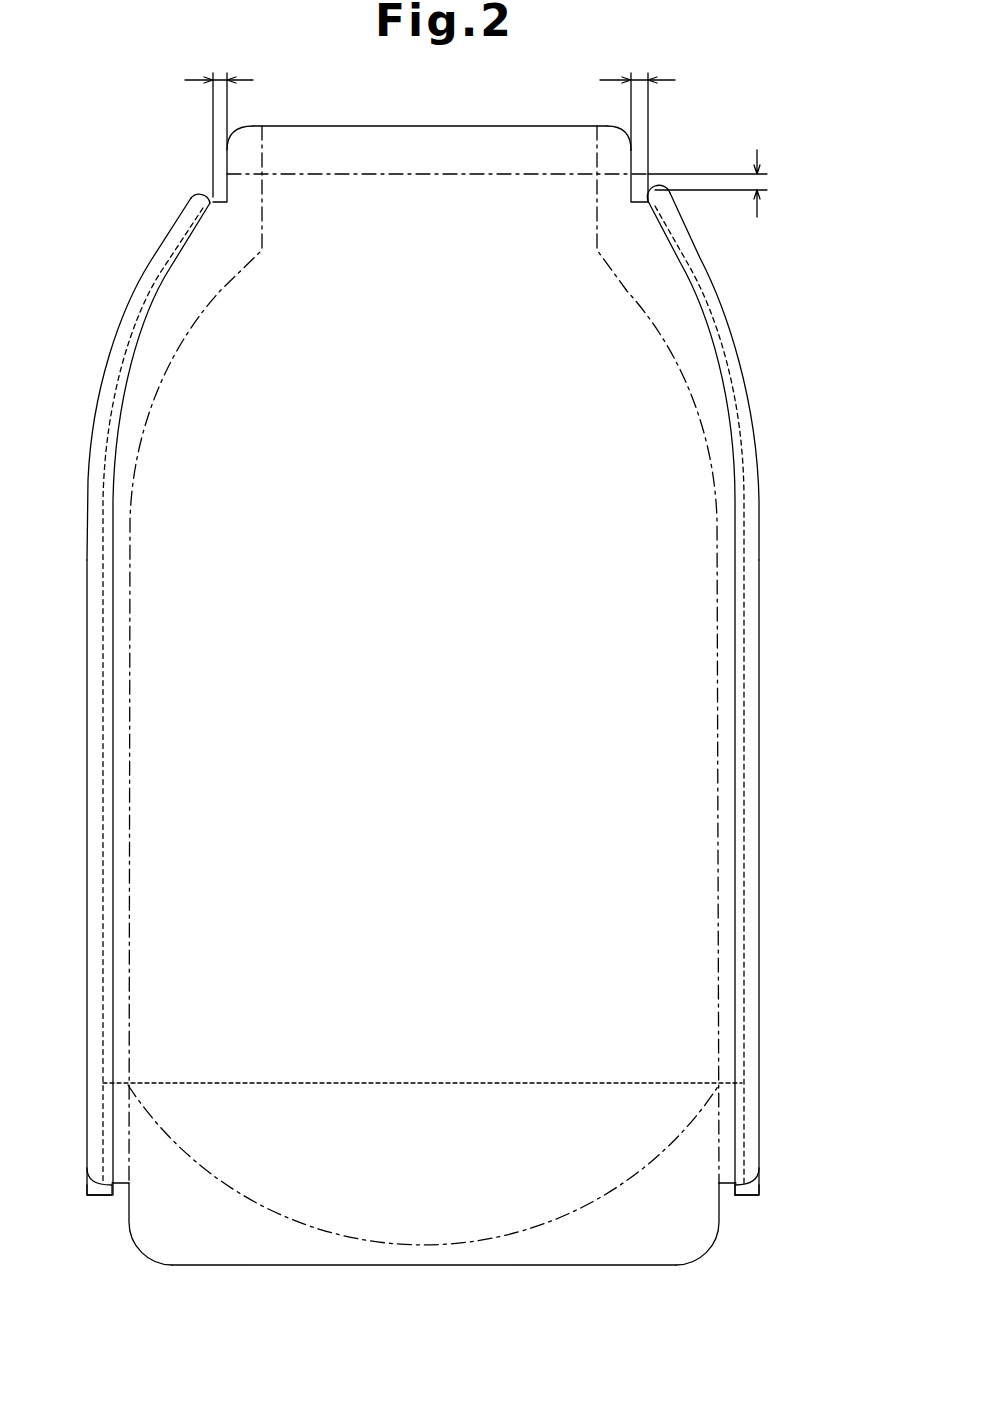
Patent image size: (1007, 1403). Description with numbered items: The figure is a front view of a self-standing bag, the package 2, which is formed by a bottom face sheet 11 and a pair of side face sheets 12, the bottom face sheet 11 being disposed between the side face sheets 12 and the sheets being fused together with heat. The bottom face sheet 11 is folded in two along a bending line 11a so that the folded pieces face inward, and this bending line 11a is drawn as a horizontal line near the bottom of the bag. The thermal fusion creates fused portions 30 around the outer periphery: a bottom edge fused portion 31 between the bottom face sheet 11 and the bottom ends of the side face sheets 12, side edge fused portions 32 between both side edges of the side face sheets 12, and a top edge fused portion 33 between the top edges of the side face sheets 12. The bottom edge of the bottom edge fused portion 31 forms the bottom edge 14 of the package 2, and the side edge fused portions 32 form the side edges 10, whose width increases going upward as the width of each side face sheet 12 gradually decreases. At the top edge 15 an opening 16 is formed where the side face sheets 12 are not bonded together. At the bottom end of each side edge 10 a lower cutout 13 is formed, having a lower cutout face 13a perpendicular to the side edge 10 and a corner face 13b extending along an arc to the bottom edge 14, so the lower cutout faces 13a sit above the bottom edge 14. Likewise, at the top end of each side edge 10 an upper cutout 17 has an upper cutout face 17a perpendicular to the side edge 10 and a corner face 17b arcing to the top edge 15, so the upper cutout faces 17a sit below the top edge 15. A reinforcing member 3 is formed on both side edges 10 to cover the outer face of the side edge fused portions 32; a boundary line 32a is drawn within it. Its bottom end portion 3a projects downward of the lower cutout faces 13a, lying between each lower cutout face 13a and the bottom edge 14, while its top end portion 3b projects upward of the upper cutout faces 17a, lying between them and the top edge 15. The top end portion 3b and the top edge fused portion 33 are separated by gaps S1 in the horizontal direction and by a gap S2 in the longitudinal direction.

The package 2 is at (707, 115).
The reinforcing member 3 is at (755, 482).
The bottom end portion of the reinforcing member 3a is at (97, 1198).
The top end portion of the reinforcing member 3b is at (214, 204).
The side edge 10 is at (746, 852).
The bottom face sheet 11 is at (337, 1173).
The bending line 11a is at (471, 1083).
The side face sheet 12 is at (680, 606).
The lower cutout 13 is at (90, 1222).
The lower cutout face 13a is at (92, 1181).
The corner face 13b is at (127, 1222).
The bottom edge 14 is at (452, 1265).
The top edge 15 is at (503, 124).
The opening 16 is at (460, 142).
The upper cutout 17 is at (180, 175).
The upper cutout face 17a is at (205, 182).
The corner face 17b is at (244, 127).
The fused portion 30 is at (703, 342).
The bottom edge fused portion 31 is at (592, 1243).
The side edge fused portion 32 is at (730, 776).
The boundary of inner layer 32a is at (752, 700).
The top edge fused portion 33 is at (403, 163).
The gap S1 is at (430, 64).
The gap S2 is at (725, 183).